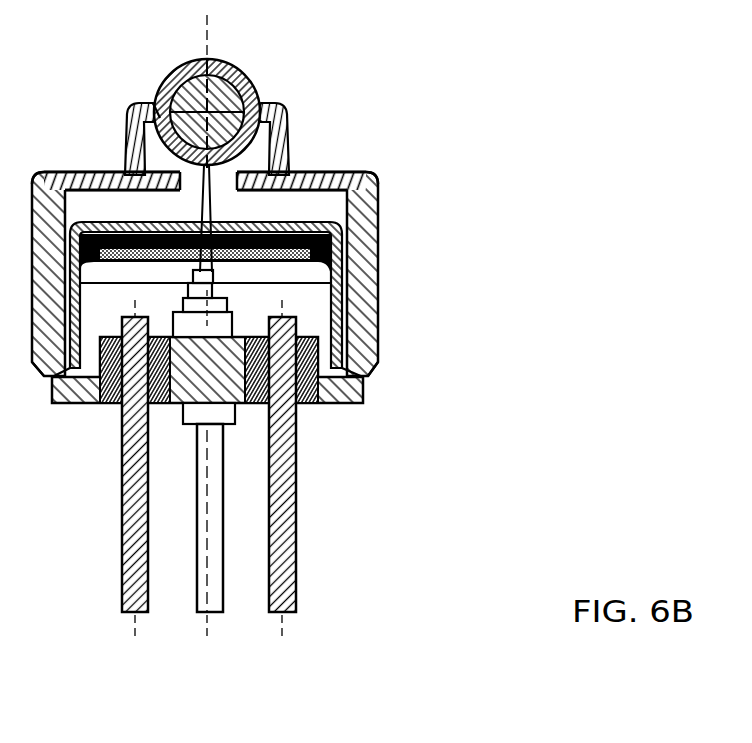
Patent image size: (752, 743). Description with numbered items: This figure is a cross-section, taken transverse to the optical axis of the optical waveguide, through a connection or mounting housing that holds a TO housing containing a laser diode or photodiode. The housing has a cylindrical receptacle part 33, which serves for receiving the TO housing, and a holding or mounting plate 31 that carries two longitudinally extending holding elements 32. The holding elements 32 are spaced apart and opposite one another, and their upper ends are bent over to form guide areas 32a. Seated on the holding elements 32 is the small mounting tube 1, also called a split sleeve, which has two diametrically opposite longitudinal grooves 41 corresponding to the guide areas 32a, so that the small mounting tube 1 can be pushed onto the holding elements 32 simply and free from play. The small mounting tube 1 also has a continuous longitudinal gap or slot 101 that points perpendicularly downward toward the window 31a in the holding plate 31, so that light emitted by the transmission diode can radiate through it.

The small mounting tube 1 is at (240, 72).
The longitudinal grooves 41 is at (157, 99).
The guide areas 32a is at (263, 107).
The holding elements 32 is at (290, 135).
The longitudinal gap or slot 101 is at (220, 175).
The holding plate 31 is at (370, 171).
The window 31a is at (220, 198).
The cylindrical receptacle part 33 is at (370, 280).